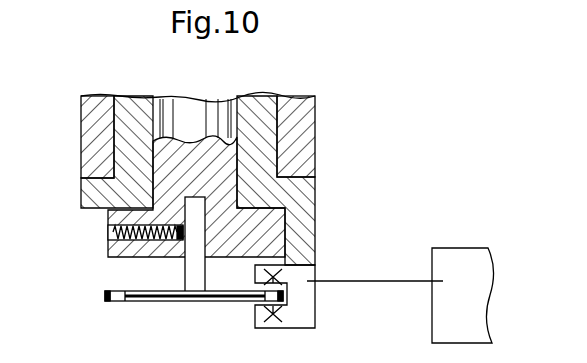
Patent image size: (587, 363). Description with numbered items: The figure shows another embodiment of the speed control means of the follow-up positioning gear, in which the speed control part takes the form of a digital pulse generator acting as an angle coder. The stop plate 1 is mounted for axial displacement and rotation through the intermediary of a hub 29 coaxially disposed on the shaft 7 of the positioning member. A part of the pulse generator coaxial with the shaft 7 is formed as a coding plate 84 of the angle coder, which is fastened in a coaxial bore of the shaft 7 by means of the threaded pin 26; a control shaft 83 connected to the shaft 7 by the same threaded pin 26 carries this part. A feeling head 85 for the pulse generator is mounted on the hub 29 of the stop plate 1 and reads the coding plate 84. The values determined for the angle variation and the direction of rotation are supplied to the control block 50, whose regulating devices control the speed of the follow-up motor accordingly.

The stop plate 1 is at (305, 113).
The shaft 7 is at (112, 252).
The threaded pin 26 is at (108, 227).
The hub 29 is at (307, 242).
The control block 50 is at (472, 327).
The control shaft 83 is at (193, 273).
The coding plate 84 is at (195, 298).
The feeling head 85 is at (307, 297).